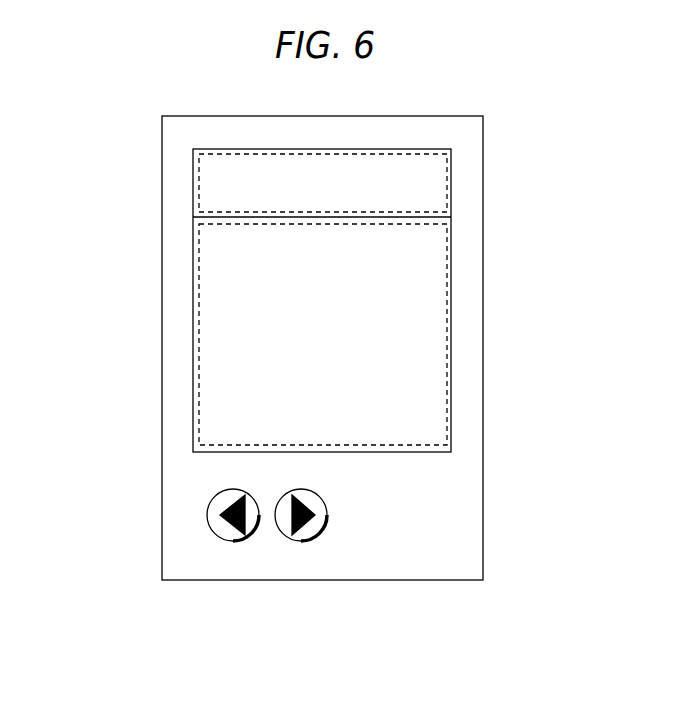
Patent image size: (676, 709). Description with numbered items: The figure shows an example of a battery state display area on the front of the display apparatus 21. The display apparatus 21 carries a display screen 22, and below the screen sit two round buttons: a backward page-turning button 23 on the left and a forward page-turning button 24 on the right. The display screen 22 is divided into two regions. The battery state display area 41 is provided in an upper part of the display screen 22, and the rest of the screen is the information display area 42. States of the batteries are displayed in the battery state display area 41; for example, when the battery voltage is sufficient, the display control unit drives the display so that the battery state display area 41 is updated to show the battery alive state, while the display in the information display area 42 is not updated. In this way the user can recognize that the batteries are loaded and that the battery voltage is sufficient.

The display apparatus 21 is at (162, 487).
The display screen 22 is at (188, 265).
The backward page-turning button 23 is at (231, 541).
The forward page-turning button 24 is at (303, 541).
The battery state display area 41 is at (437, 185).
The information display area 42 is at (435, 323).